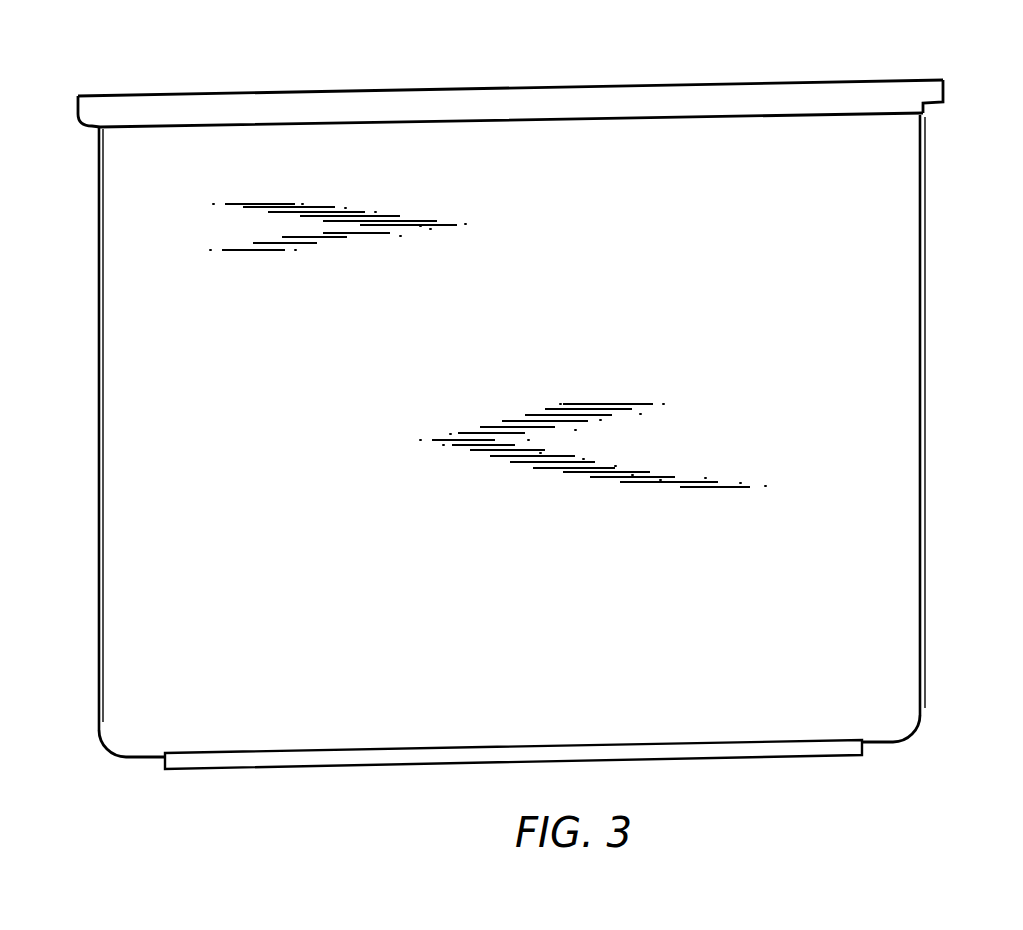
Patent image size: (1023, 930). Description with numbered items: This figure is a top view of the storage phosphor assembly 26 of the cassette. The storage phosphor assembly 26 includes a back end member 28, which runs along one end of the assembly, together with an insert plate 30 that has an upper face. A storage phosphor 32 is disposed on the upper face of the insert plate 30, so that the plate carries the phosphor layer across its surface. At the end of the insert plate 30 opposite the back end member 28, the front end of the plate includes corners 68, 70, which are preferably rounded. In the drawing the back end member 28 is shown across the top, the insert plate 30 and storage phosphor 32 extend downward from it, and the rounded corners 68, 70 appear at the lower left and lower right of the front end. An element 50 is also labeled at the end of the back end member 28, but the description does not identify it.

The storage phosphor assembly 26 is at (508, 466).
The back end member 28 is at (525, 81).
The header bar end cap 50 is at (895, 78).
The insert plate 30 is at (118, 496).
The storage phosphor 32 is at (873, 502).
The corner 68 is at (113, 758).
The corner 70 is at (912, 738).